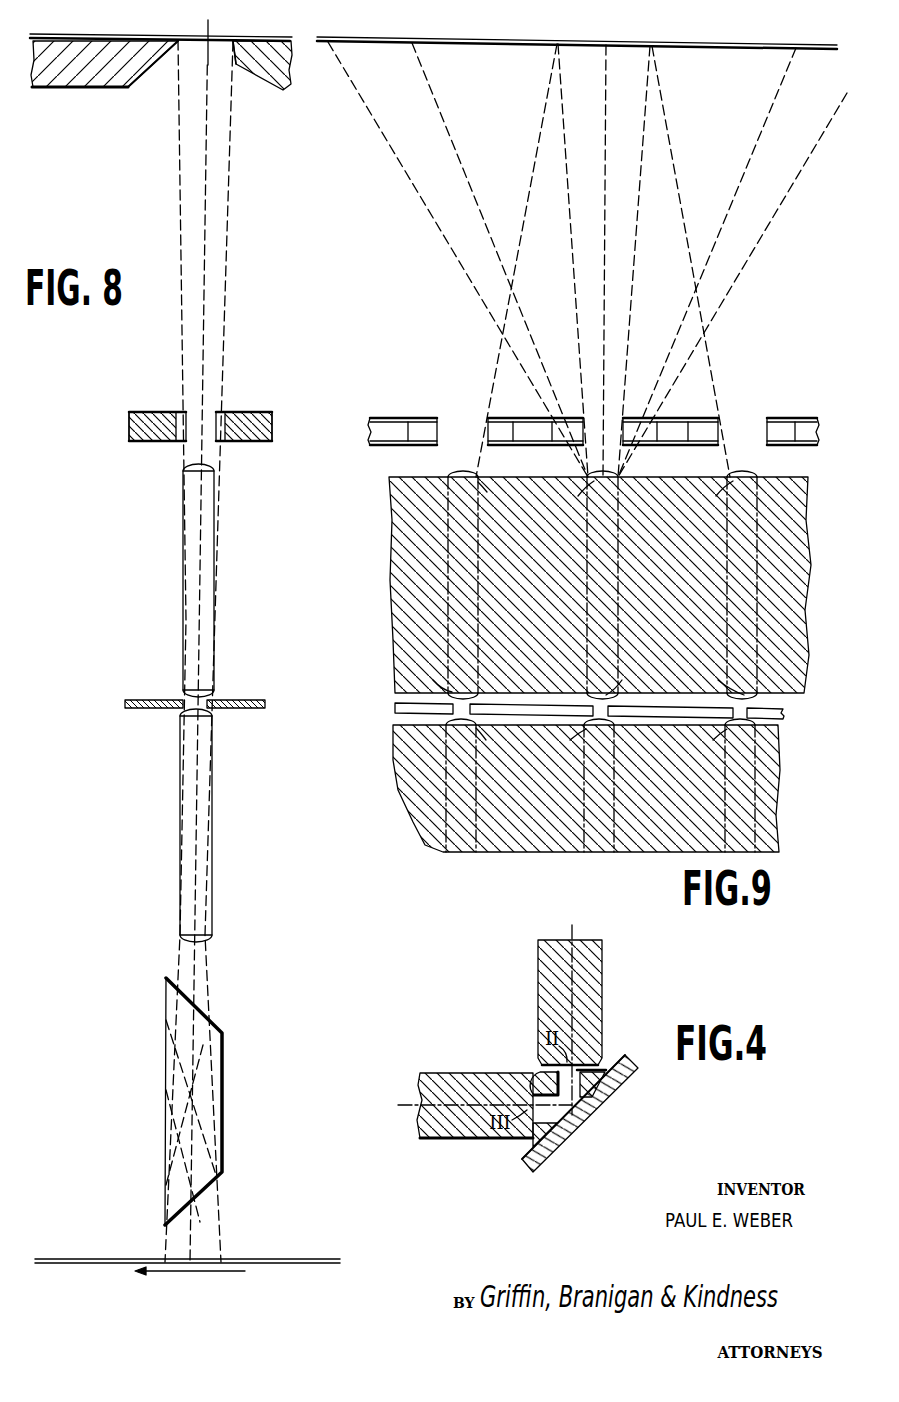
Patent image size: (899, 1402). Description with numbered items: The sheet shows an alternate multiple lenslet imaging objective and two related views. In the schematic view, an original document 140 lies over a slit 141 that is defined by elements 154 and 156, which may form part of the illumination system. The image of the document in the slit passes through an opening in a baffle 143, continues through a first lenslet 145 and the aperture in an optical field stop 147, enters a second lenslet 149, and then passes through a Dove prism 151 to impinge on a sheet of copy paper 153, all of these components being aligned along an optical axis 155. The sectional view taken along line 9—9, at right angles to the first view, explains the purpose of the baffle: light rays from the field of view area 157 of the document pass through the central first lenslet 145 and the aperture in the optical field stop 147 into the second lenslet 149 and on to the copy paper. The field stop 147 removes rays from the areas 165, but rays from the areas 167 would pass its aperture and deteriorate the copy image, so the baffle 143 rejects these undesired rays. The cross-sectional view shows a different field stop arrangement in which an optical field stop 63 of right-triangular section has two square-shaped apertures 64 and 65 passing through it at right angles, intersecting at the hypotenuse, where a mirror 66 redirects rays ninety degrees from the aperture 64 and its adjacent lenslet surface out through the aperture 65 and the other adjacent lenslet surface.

In FIG. 8, the line 9— 9 is at (207, 24).
In FIG. 8, the original document 140 is at (235, 63).
In FIG. 8, the slit 141 is at (166, 76).
In FIG. 8, the baffle 143 is at (160, 412).
In FIG. 9, the baffle 143 is at (676, 422).
In FIG. 8, the first lenslet 145 is at (181, 605).
In FIG. 9, the first lenslet 145 is at (618, 518).
In FIG. 8, the optical field stop 147 is at (152, 700).
In FIG. 9, the optical field stop 147 is at (523, 704).
In FIG. 8, the second lenslet 149 is at (180, 778).
In FIG. 9, the second lenslet 149 is at (607, 782).
In FIG. 8, the Dove prism 151 is at (165, 1043).
In FIG. 8, the sheet of copy paper 153 is at (95, 1258).
In FIG. 8, the element defining slit 154 is at (66, 88).
In FIG. 8, the optical axis 155 is at (205, 292).
In FIG. 8, the element defining slit 156 is at (283, 90).
In FIG. 9, the field of view area 157 is at (596, 46).
In FIG. 9, the areas 165 is at (486, 44).
In FIG. 9, the areas 167 is at (384, 44).
In FIG. 4, the optical field stop 63 is at (608, 1063).
In FIG. 4, the square-shaped aperture 64 is at (585, 1068).
In FIG. 4, the square-shaped aperture 65 is at (533, 1100).
In FIG. 4, the mirror 66 is at (603, 1100).